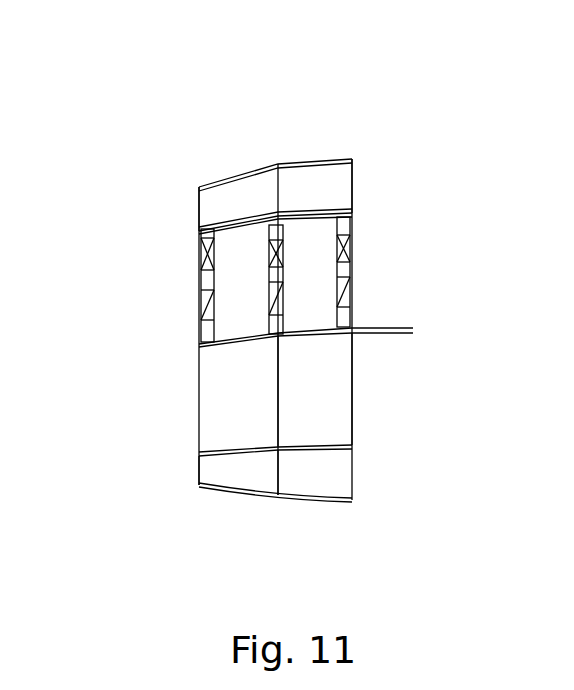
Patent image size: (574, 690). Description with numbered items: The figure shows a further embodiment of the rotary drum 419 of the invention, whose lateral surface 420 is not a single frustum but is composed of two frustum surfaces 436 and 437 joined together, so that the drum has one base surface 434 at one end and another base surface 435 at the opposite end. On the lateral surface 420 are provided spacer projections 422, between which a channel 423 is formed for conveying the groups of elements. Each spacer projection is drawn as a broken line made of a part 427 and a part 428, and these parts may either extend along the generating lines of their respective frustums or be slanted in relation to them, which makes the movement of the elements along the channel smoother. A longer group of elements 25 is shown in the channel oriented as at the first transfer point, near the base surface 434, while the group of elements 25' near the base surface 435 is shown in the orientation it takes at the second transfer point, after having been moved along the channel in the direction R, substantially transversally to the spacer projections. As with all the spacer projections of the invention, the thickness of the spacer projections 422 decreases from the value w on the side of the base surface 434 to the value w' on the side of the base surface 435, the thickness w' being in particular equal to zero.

The drum 419 is at (308, 147).
The lateral surface 420 is at (262, 182).
The base surface 435 is at (185, 199).
The base surface 434 is at (368, 190).
The group of elements 25' is at (143, 283).
The group of elements 25 is at (373, 271).
The direction R is at (318, 280).
The thickness w' is at (237, 349).
The thickness w is at (382, 337).
The lower body portion 423 is at (322, 420).
The part of spacer projection 428 is at (200, 455).
The part of spacer projection 427 is at (352, 452).
The spacer projections 422 is at (253, 458).
The frustum surface 437 is at (262, 478).
The frustum surface 436 is at (340, 483).